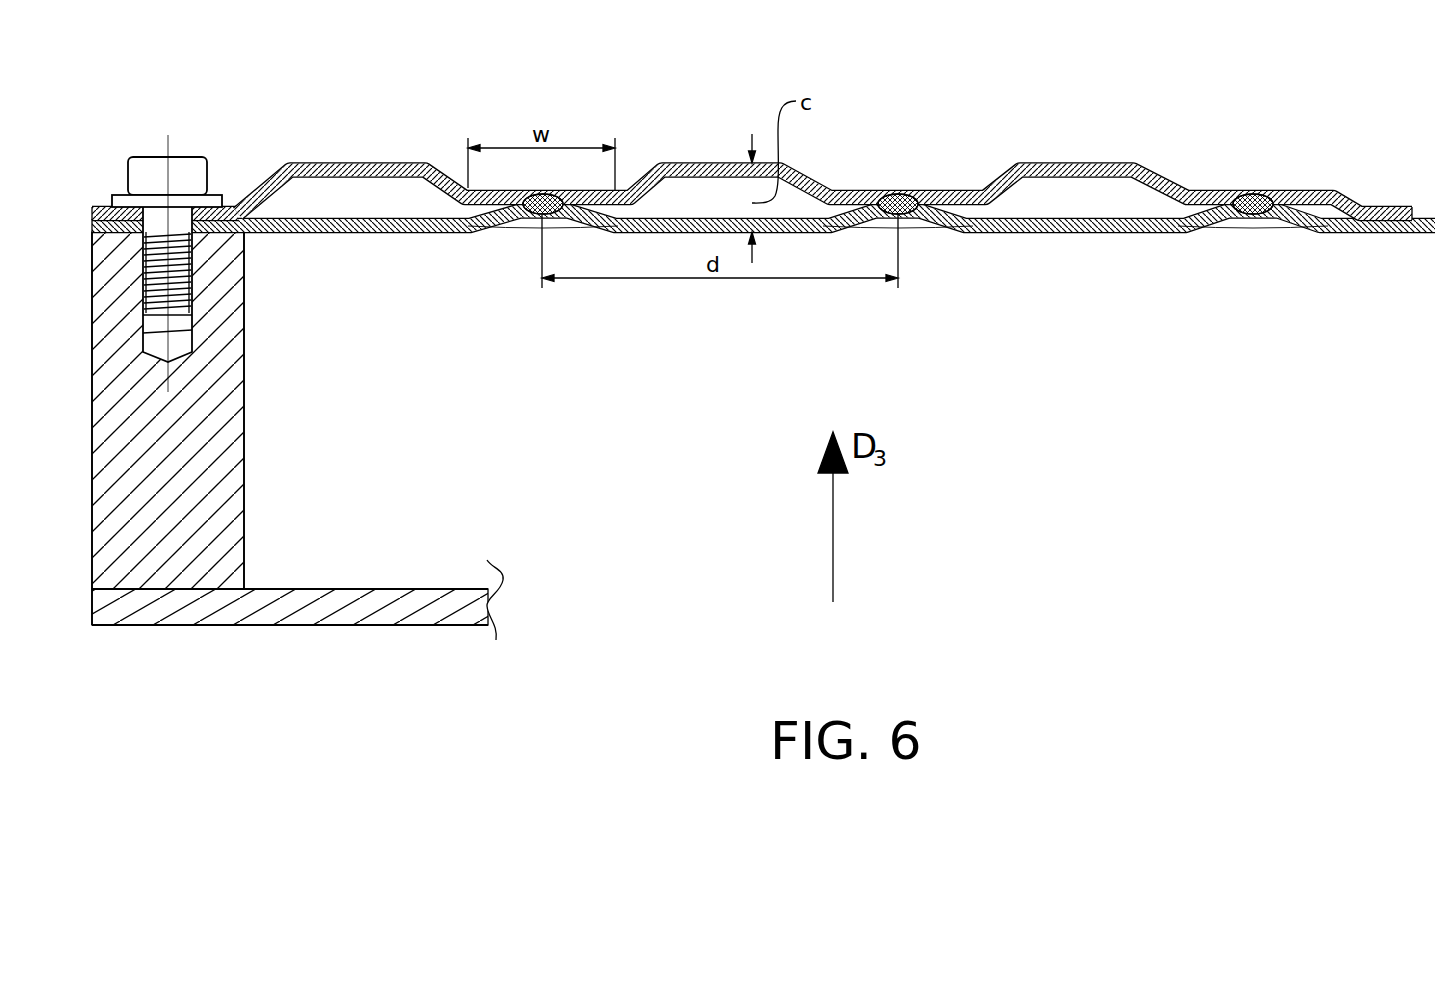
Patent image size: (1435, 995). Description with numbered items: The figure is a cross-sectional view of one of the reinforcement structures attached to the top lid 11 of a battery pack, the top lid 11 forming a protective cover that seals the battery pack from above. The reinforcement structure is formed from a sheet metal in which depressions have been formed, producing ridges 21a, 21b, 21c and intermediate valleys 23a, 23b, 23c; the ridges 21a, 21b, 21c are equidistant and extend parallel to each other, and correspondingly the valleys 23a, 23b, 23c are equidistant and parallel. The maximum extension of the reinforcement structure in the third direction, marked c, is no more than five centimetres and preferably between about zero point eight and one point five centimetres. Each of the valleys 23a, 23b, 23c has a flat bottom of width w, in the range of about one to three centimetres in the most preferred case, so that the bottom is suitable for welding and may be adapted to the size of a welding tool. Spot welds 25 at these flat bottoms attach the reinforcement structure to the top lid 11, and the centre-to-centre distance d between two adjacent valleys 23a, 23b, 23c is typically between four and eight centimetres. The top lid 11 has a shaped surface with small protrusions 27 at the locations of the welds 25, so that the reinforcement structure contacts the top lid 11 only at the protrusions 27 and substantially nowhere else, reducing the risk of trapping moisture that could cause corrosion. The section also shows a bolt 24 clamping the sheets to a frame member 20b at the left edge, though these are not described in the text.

The top lid 11 is at (1141, 263).
The frame member 20b is at (184, 427).
The ridge 21a is at (1068, 163).
The ridge 21b is at (708, 163).
The ridge 21c is at (347, 163).
The valley 23a is at (1291, 192).
The valley 23b is at (921, 190).
The valley 23c is at (506, 192).
The bolt 24 is at (150, 173).
The spot weld 25 is at (523, 215).
The protrusion 27 is at (575, 215).